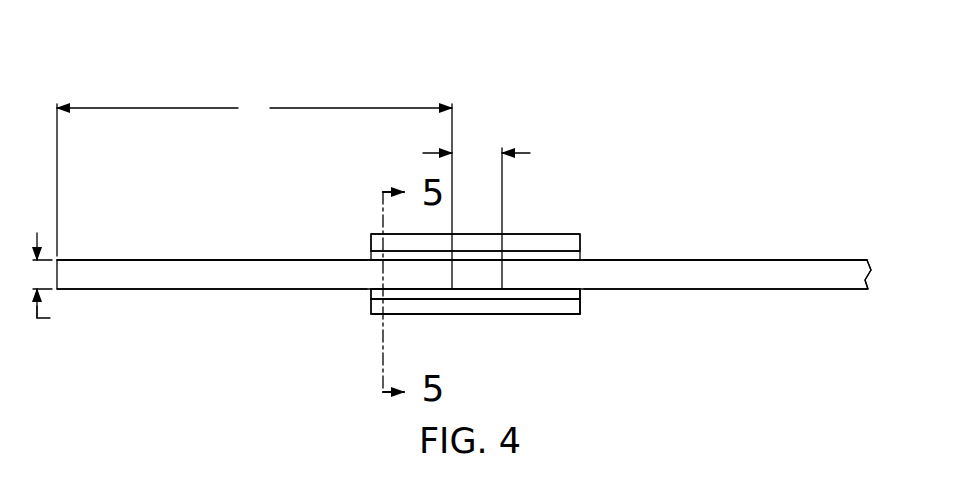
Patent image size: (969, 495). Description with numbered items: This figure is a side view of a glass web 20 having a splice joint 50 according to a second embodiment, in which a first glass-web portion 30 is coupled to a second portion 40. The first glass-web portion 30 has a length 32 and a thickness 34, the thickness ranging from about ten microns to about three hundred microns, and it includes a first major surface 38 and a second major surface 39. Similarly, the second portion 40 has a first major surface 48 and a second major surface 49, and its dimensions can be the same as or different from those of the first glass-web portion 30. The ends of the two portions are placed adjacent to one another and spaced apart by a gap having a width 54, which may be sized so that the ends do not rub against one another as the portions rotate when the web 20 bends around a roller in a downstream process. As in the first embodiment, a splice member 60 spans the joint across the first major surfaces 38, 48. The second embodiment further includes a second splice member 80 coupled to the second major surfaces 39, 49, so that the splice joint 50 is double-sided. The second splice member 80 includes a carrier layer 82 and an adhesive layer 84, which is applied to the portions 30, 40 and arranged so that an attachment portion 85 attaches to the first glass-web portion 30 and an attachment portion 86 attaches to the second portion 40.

The web 20 is at (746, 172).
The first glass-web portion 30 is at (147, 285).
The length 32 is at (254, 192).
The thickness 34 is at (58, 283).
The first major surface 38 is at (178, 253).
The second major surface 39 is at (196, 297).
The second portion 40 is at (832, 282).
The first major surface 48 is at (784, 256).
The second major surface 49 is at (776, 297).
The splice joint 50 is at (566, 153).
The width 54 is at (476, 215).
The splice member 60 is at (523, 234).
The second splice member 80 is at (453, 316).
The carrier layer 82 is at (520, 316).
The adhesive layer 84 is at (372, 294).
The attachment portion 85 is at (372, 312).
The attachment portion 86 is at (577, 306).